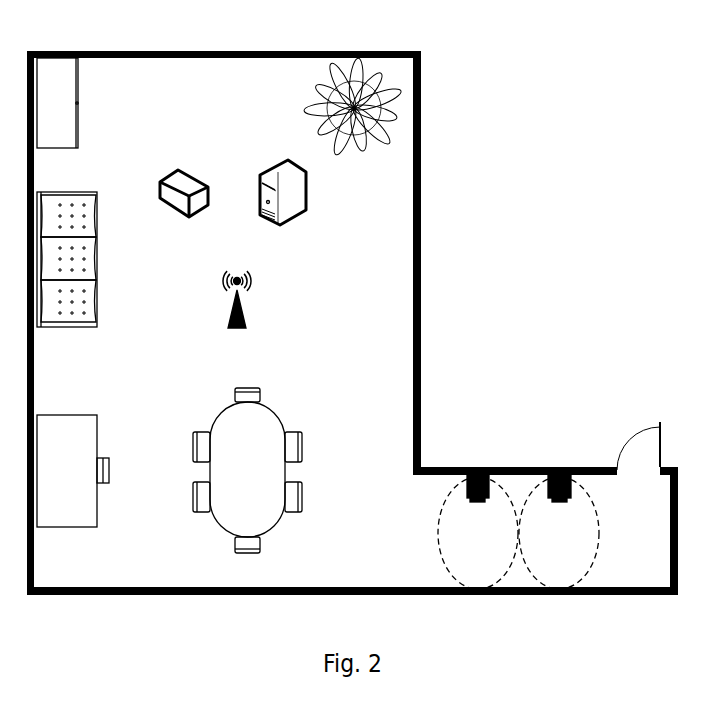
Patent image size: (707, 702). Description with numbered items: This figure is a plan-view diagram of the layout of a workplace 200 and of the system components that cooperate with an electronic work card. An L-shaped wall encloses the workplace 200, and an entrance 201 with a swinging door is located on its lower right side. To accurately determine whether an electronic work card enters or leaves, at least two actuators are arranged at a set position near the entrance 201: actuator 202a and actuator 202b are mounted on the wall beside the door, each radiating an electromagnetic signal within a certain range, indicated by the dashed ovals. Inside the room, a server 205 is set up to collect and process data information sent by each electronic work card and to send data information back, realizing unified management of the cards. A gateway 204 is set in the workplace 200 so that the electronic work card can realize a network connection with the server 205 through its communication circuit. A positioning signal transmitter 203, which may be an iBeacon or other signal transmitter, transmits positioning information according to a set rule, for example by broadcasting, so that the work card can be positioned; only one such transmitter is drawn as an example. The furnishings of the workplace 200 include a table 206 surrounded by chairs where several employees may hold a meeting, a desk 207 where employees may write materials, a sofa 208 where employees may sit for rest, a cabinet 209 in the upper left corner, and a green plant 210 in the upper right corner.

The workplace 200 is at (421, 232).
The entrance 201 is at (633, 432).
The actuator 202a is at (481, 467).
The actuator 202b is at (563, 467).
The positioning signal transmitter 203 is at (250, 302).
The gateway 204 is at (190, 177).
The server 205 is at (296, 193).
The table 206 is at (275, 413).
The desk 207 is at (88, 438).
The sofa 208 is at (86, 270).
The cabinet 209 is at (70, 123).
The green plant 210 is at (385, 121).